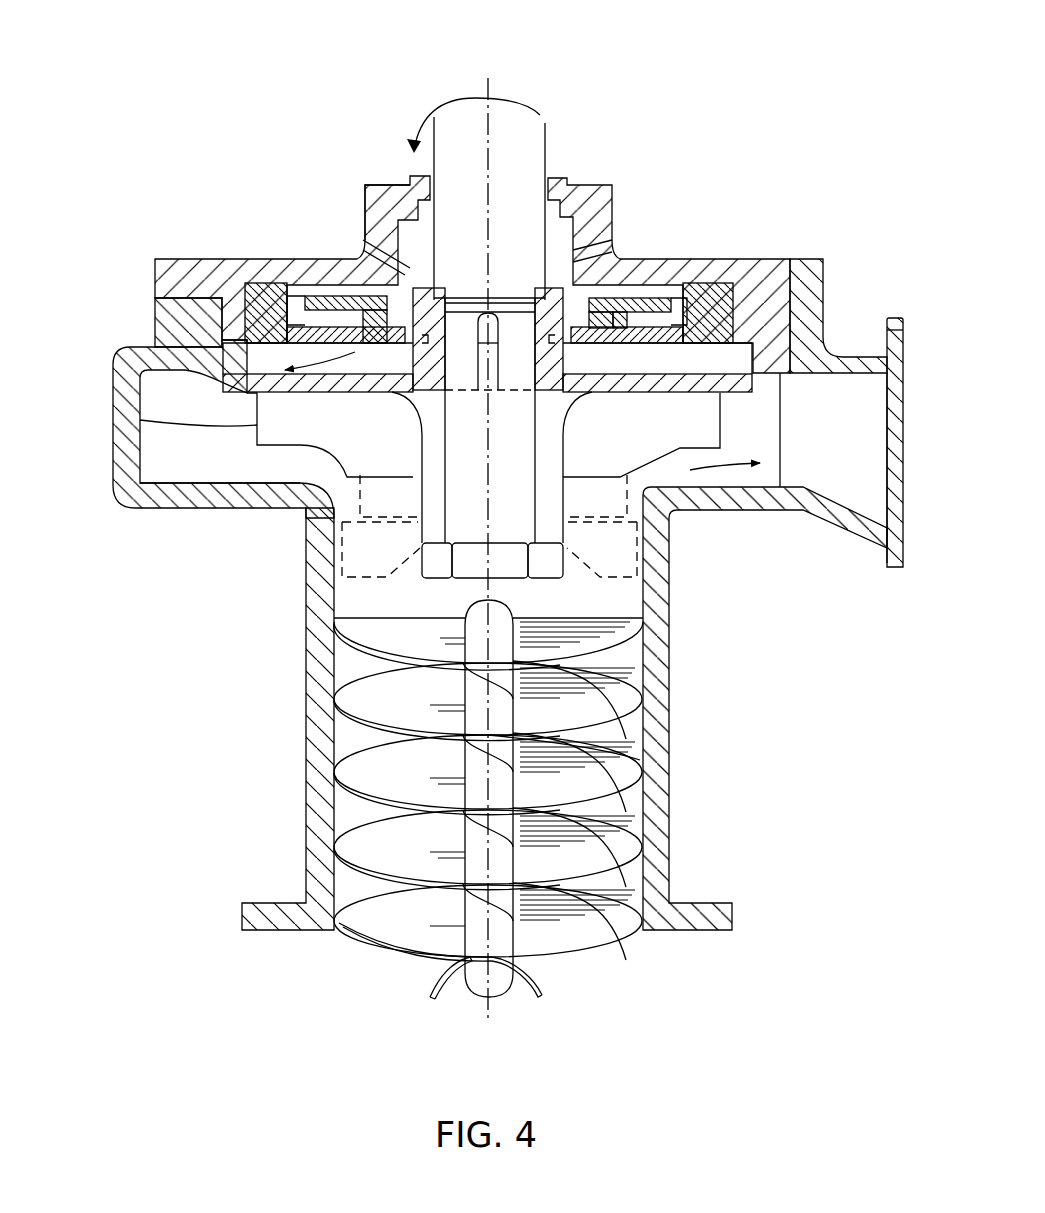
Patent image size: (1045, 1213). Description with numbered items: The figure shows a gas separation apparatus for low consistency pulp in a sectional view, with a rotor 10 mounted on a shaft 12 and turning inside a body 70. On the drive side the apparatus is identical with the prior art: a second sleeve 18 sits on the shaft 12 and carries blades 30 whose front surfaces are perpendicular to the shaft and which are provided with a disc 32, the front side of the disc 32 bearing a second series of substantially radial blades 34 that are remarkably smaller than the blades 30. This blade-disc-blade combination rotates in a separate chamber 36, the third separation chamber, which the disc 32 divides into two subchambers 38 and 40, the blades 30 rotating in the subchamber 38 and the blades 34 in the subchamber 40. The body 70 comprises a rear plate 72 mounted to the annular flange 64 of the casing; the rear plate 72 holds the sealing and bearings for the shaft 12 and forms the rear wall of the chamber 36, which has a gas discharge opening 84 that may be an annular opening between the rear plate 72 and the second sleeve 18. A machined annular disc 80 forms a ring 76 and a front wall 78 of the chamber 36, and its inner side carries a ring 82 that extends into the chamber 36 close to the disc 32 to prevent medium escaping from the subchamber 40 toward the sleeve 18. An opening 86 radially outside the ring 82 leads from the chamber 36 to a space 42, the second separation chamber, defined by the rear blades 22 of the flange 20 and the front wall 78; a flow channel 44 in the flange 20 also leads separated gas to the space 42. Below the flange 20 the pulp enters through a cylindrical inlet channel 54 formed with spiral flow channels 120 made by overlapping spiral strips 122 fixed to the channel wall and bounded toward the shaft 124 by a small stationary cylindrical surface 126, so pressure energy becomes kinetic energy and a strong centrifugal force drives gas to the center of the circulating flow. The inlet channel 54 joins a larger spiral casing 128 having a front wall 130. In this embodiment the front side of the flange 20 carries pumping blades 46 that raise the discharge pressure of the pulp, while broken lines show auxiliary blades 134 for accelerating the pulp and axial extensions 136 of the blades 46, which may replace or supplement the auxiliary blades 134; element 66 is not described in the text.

The rotor 10 is at (745, 400).
The shaft 12 is at (507, 150).
The second sleeve 18 is at (617, 363).
The flange 20 is at (757, 345).
The rear blades 22 is at (737, 357).
The blades 30 is at (703, 290).
The disc 32 is at (295, 297).
The second series of radial blades 34 is at (292, 292).
The chamber 36 is at (273, 287).
The subchamber 38 is at (323, 297).
The subchamber 40 is at (163, 337).
The space 42 is at (113, 415).
The flow channel 44 is at (303, 513).
The pumping blades 46 is at (175, 463).
The inlet channel 54 is at (665, 645).
The annular flange 64 is at (818, 316).
The flange lip 66 is at (897, 318).
The body 70 is at (628, 170).
The rear plate 72 is at (615, 245).
The ring 76 is at (698, 305).
The front wall 78 is at (683, 297).
The machined annular disc 80 is at (170, 310).
The ring 82 is at (355, 246).
The gas discharge opening 84 is at (367, 185).
The opening 86 is at (660, 280).
The spiral flow channel 120 is at (637, 760).
The spiral strips 122 is at (603, 843).
The shaft 124 is at (556, 996).
The cylindrical surface 126 is at (643, 702).
The spiral casing 128 is at (267, 430).
The front wall 130 is at (243, 490).
The auxiliary blades 134 is at (380, 490).
The axial extensions 136 is at (377, 557).